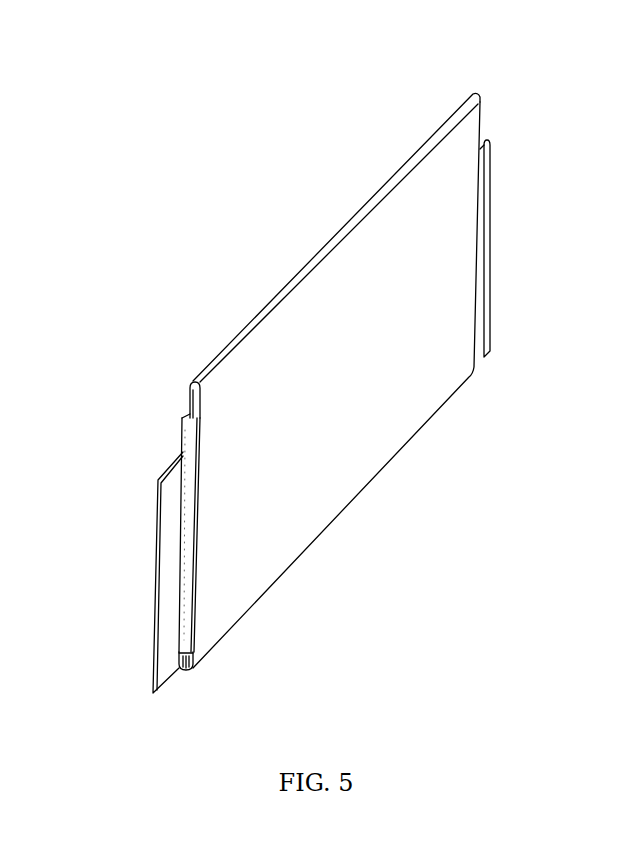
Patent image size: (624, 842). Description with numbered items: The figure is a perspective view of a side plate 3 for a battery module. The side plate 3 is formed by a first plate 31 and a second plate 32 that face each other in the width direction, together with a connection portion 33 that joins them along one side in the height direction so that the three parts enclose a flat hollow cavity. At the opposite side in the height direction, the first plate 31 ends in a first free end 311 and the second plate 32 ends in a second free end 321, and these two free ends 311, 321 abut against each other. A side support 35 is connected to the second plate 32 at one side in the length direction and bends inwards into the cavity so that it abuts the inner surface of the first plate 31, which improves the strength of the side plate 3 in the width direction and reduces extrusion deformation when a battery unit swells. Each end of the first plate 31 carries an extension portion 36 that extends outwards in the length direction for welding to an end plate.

The side plate 3 is at (90, 203).
The first plate 31 is at (182, 432).
The first free end 311 is at (181, 674).
The second plate 32 is at (353, 353).
The second free end 321 is at (194, 674).
The connection portion 33 is at (307, 273).
The side support 35 is at (193, 442).
The extension portion 36 is at (157, 540).